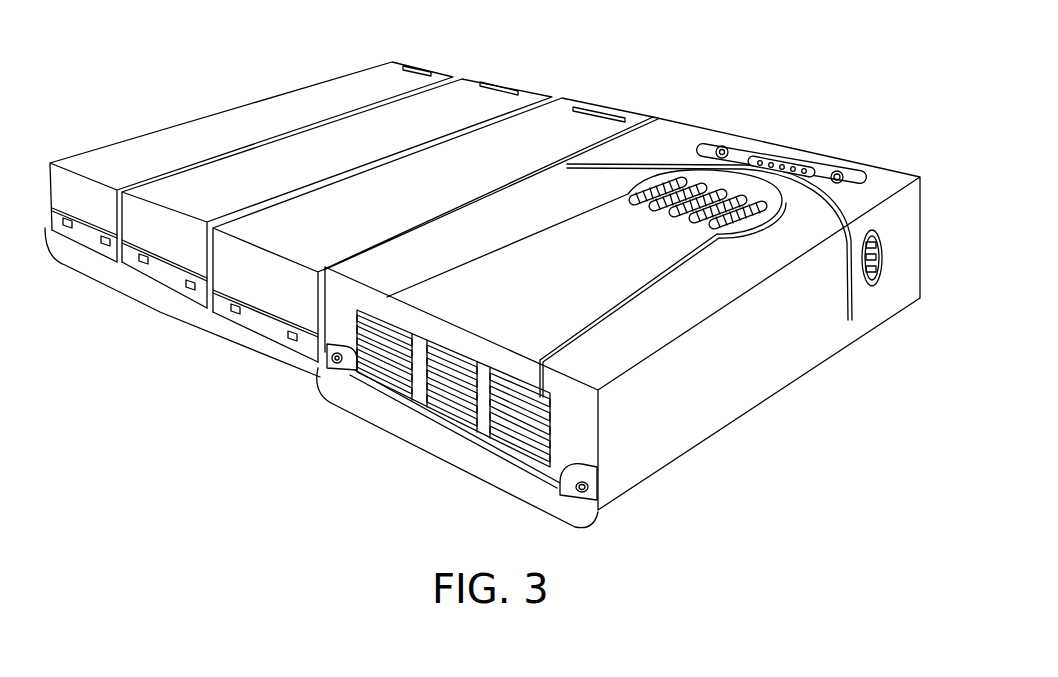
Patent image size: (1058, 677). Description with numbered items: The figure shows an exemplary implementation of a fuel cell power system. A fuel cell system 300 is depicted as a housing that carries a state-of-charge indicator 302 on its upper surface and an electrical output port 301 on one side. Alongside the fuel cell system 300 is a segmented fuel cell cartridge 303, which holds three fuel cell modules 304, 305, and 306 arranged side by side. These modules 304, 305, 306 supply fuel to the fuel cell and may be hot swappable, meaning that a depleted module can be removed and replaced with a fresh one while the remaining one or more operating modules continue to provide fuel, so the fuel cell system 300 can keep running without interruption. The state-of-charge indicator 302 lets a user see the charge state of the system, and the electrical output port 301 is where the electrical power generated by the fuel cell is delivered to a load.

The fuel cell system 300 is at (443, 460).
The electrical output port 301 is at (878, 268).
The state-of-charge indicator 302 is at (792, 148).
The segmented fuel cell cartridge 303 is at (165, 332).
The fuel cell module 304 is at (340, 92).
The fuel cell module 305 is at (482, 98).
The fuel cell module 306 is at (582, 127).